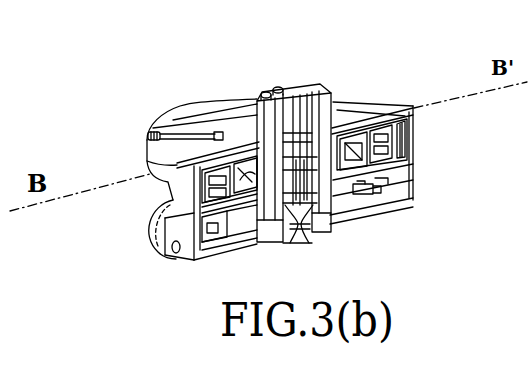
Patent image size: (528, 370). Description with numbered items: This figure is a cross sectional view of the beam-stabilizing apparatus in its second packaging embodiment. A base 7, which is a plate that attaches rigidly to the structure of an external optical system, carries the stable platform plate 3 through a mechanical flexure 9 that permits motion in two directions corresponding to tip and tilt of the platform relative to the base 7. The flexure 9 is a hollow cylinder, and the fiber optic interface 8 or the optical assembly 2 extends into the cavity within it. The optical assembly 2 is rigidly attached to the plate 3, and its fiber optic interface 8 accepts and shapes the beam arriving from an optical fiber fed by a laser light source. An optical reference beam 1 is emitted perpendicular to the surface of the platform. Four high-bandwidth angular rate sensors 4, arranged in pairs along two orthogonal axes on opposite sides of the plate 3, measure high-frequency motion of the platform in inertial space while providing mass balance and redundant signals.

The optical reference beam 1 is at (293, 84).
The optical assembly 2 is at (268, 92).
The platform plate 3 is at (152, 131).
The angular rate sensors 4 is at (150, 234).
The base 7 is at (360, 212).
The fiber optic interface 8 is at (308, 231).
The mechanical flexure 9 is at (292, 231).